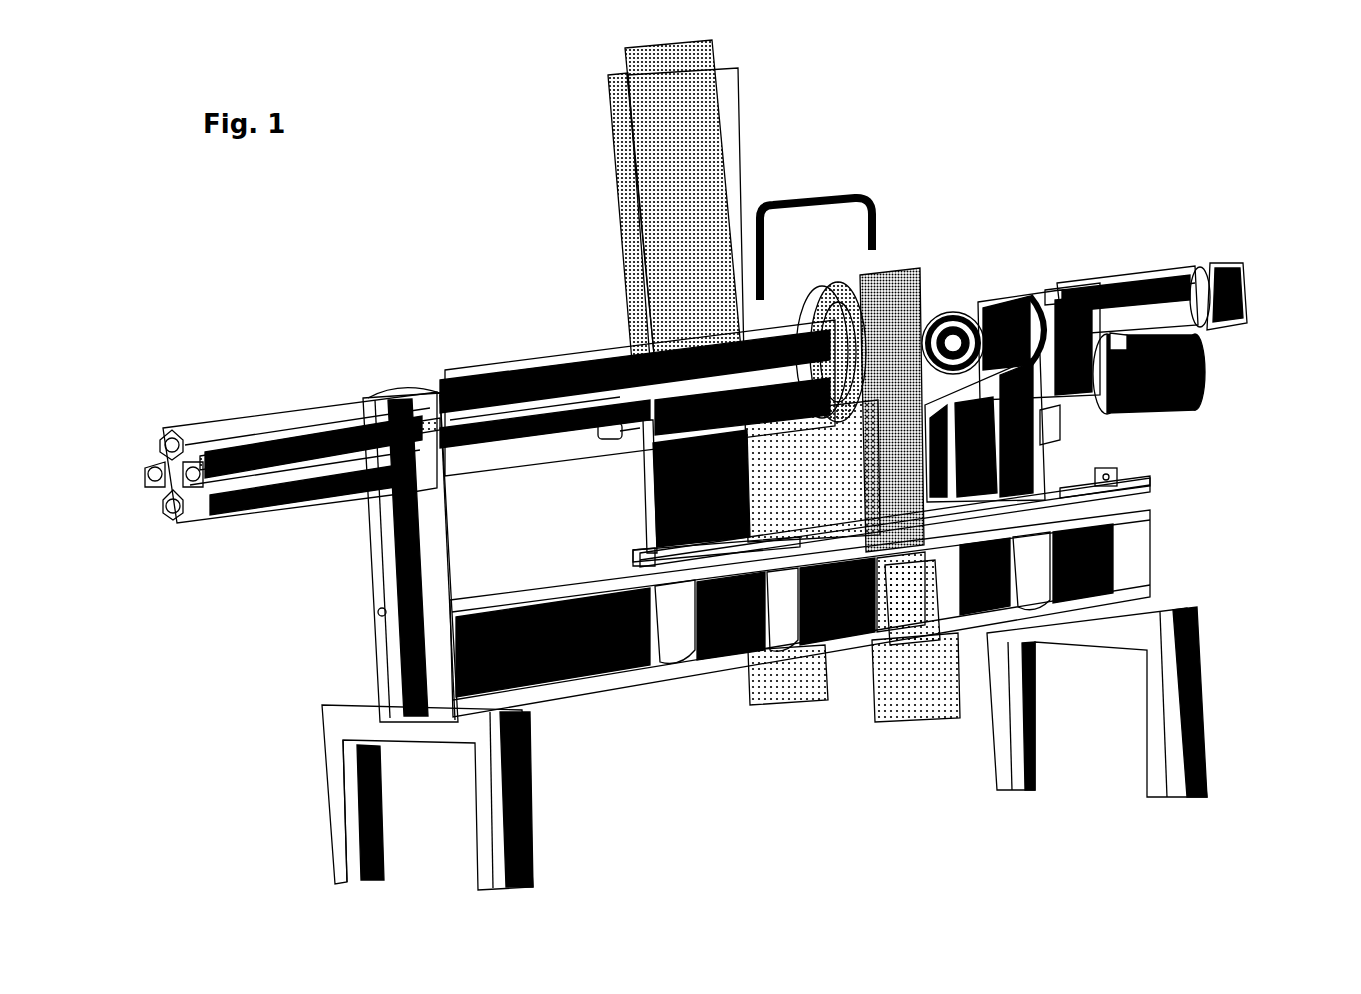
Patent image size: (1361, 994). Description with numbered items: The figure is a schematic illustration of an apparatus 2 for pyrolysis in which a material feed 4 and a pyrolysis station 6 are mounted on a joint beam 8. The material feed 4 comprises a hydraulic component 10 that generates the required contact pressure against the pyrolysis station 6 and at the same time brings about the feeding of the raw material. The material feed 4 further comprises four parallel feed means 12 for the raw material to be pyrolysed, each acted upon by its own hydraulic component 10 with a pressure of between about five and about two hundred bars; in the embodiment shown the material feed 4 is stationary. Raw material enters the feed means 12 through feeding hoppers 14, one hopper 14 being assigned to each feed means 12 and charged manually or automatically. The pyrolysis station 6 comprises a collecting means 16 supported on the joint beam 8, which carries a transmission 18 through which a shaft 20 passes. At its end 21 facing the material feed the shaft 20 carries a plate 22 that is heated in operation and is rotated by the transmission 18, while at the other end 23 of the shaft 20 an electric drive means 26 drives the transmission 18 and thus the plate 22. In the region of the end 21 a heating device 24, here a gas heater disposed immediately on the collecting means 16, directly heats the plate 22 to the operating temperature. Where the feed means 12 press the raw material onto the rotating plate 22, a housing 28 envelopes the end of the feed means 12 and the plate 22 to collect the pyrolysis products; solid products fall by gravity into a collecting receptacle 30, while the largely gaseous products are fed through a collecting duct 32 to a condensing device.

The apparatus for pyrolysis 2 is at (437, 265).
The material feed 4 is at (228, 385).
The pyrolysis station 6 is at (1150, 147).
The joint beam 8 is at (540, 650).
The hydraulic component 10 is at (238, 505).
The feed means 12 is at (782, 420).
The feeding hopper 14 is at (668, 157).
The collecting means 16 is at (1010, 458).
The transmission 18 is at (995, 318).
The shaft 20 is at (952, 335).
The end of the shaft facing the material feed 21 is at (930, 330).
The plate 22 is at (820, 292).
The other end of the shaft 23 is at (1155, 268).
The heating device 24 is at (1228, 298).
The drive means 26 is at (1165, 393).
The housing 28 is at (900, 285).
The collecting receptacle 30 is at (920, 690).
The collecting duct 32 is at (790, 208).